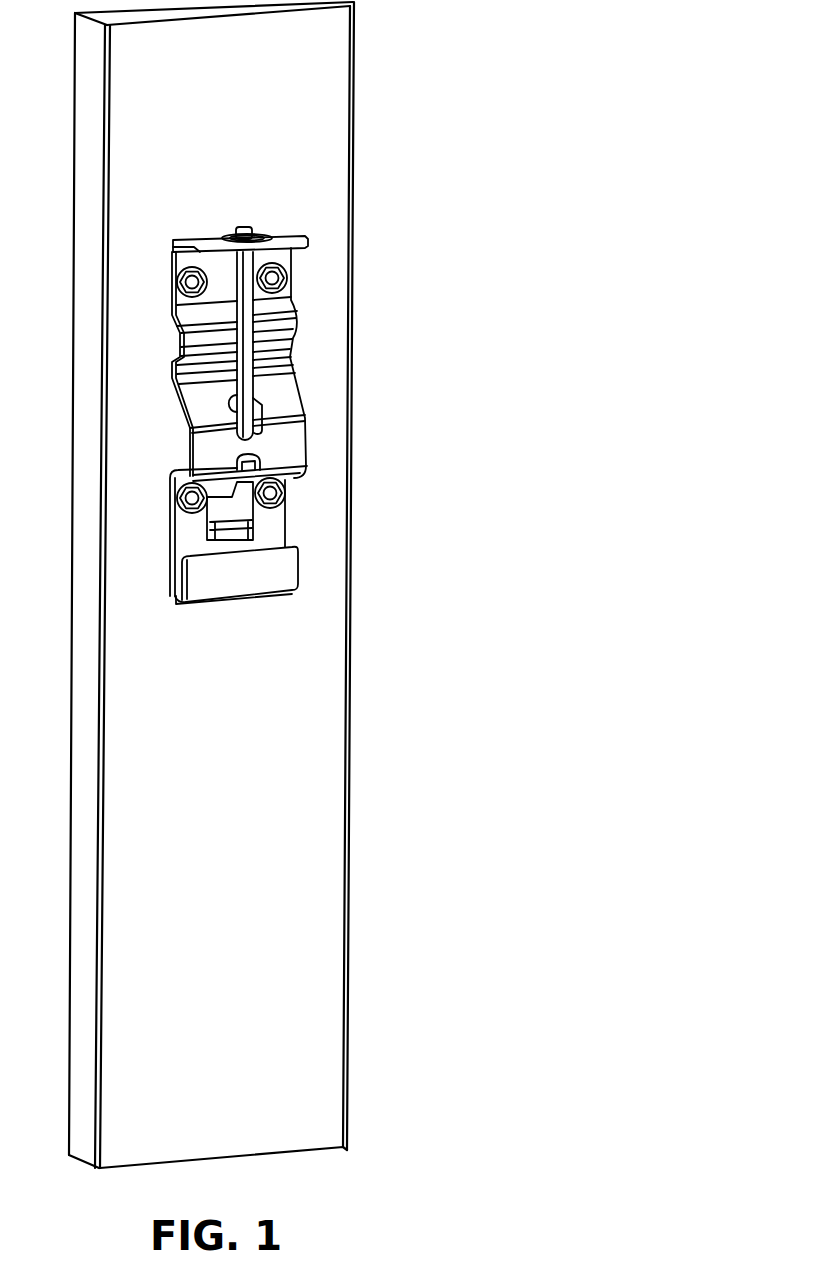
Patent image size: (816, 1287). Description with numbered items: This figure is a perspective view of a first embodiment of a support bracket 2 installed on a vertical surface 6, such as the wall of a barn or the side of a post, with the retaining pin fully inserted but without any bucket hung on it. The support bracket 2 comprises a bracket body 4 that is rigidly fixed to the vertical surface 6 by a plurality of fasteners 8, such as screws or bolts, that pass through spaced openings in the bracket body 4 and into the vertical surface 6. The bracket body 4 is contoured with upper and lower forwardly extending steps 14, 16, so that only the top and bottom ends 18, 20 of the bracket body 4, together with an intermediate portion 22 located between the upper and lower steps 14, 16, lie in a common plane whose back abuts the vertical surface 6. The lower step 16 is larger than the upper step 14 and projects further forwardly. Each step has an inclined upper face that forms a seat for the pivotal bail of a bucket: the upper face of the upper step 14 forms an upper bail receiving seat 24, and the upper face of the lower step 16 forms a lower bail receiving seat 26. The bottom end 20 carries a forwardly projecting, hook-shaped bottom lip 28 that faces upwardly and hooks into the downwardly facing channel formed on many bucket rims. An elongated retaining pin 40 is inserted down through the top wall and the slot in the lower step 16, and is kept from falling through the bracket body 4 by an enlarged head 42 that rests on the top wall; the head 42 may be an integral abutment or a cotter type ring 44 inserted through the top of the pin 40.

The support bracket 2 is at (437, 328).
The bracket body 4 is at (208, 611).
The vertical surface 6 is at (257, 762).
The fasteners 8 is at (180, 275).
The upper step 14 is at (296, 334).
The lower step 16 is at (307, 445).
The top end 18 is at (172, 262).
The bottom end 20 is at (275, 528).
The intermediate portion 22 is at (172, 370).
The upper bail receiving seat 24 is at (283, 312).
The lower bail receiving seat 26 is at (275, 396).
The bottom lip 28 is at (262, 580).
The retaining pin 40 is at (237, 385).
The enlarged head 42 is at (263, 231).
The cotter type ring 44 is at (278, 236).